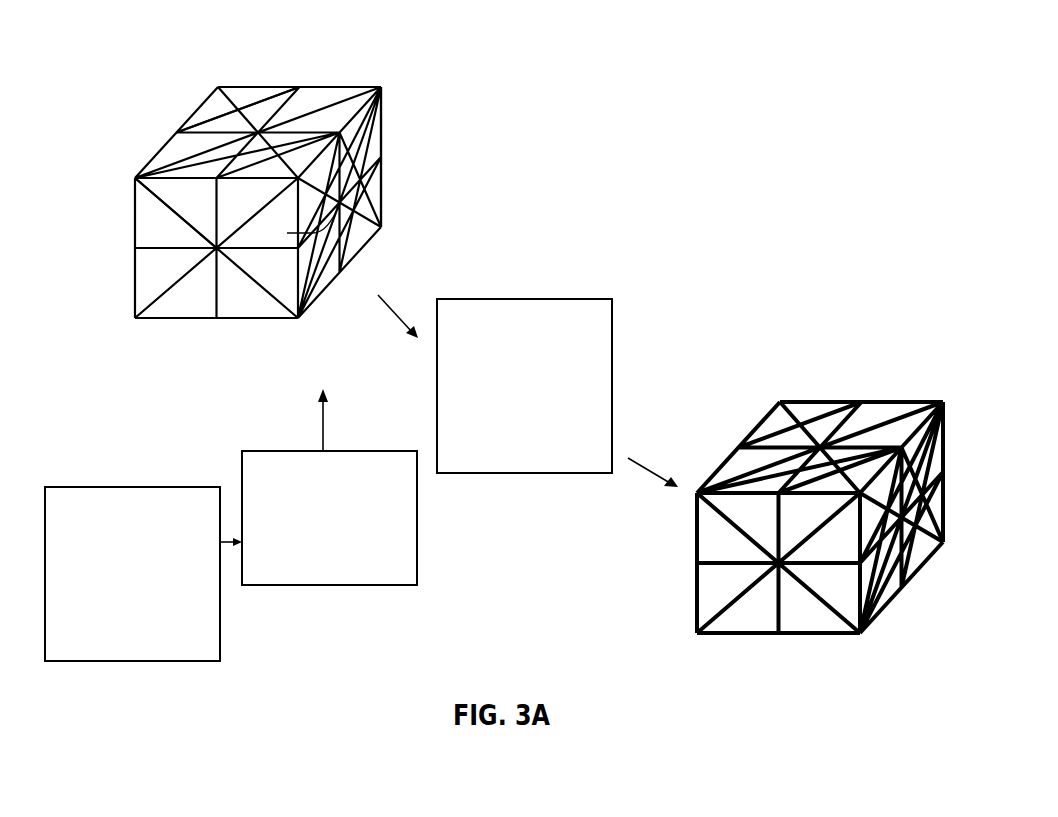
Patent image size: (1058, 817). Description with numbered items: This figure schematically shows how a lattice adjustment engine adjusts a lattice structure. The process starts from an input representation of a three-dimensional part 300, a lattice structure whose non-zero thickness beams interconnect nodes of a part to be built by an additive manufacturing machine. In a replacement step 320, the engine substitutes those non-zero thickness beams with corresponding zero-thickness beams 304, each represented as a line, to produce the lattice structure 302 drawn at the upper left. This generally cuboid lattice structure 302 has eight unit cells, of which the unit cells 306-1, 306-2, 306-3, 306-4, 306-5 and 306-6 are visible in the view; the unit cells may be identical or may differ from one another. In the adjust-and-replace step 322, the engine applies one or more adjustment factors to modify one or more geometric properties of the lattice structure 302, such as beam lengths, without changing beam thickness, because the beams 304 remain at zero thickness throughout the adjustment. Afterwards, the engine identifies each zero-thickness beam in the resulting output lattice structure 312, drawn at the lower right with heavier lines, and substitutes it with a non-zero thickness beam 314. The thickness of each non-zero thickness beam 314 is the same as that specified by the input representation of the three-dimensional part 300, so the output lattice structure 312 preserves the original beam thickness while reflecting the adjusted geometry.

The input representation of a 3D part 300 is at (110, 487).
The lattice structure 302 is at (235, 356).
The zero-thickness beams 304 is at (230, 110).
The unit cell 306-1 is at (177, 310).
The unit cell 306-2 is at (270, 312).
The unit cell 306-3 is at (148, 208).
The unit cell 306-4 is at (382, 176).
The unit cell 306-5 is at (197, 120).
The unit cell 306-6 is at (323, 98).
The output lattice structure 312 is at (773, 656).
The non-zero thickness beams 314 is at (790, 423).
The replace with zero-thickness beams step 320 is at (365, 451).
The adjust and replace with non-zero thickness beams step 322 is at (508, 299).